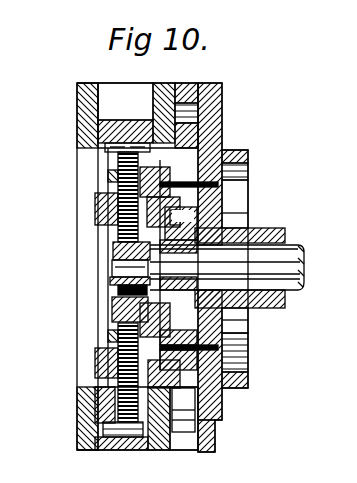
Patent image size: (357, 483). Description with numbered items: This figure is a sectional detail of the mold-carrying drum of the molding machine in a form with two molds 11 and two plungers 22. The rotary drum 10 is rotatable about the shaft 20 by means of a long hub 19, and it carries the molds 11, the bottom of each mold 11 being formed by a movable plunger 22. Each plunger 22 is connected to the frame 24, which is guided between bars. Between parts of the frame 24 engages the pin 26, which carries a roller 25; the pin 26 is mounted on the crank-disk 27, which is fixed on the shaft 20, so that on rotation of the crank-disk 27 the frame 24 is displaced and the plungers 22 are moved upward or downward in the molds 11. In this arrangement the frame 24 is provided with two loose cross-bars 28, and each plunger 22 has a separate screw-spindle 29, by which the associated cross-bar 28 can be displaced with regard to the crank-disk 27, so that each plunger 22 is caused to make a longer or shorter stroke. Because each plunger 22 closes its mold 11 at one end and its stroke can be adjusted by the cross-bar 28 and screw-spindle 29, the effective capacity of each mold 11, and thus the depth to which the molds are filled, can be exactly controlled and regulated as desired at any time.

The rotary drum 10 is at (167, 452).
The mold 11 is at (55, 414).
The long hub 19 is at (262, 229).
The shaft 20 is at (287, 265).
The movable plunger 22 is at (78, 127).
The frame 24 is at (95, 213).
The roller 25 is at (103, 277).
The pin 26 is at (112, 297).
The crank-disk 27 is at (189, 265).
The cross-bar 28 is at (112, 248).
The screw-spindle 29 is at (112, 159).